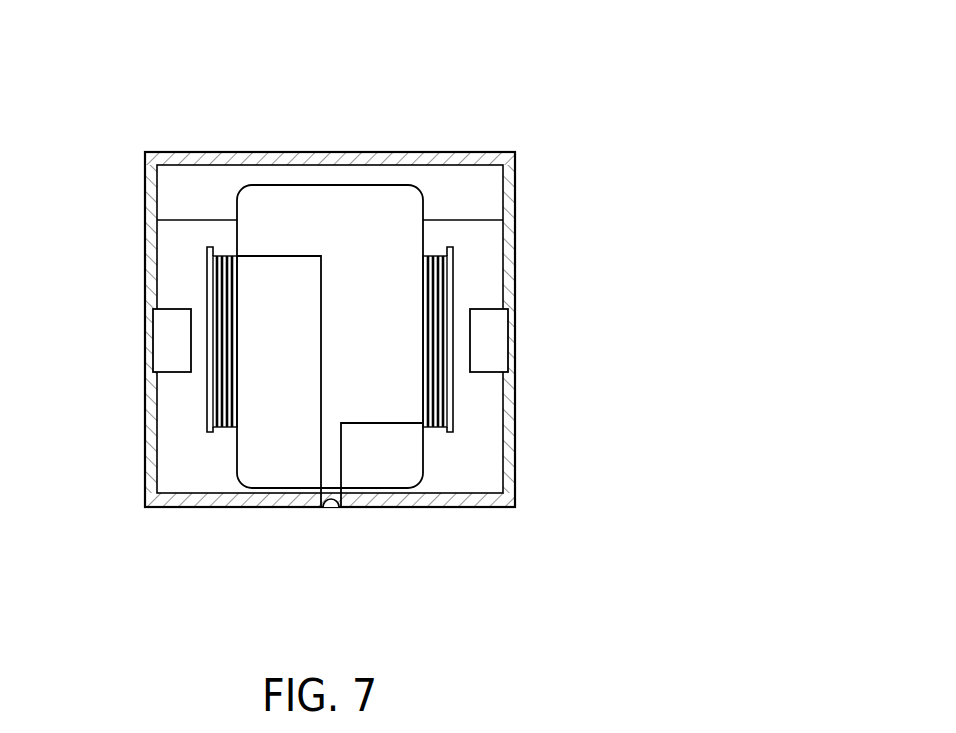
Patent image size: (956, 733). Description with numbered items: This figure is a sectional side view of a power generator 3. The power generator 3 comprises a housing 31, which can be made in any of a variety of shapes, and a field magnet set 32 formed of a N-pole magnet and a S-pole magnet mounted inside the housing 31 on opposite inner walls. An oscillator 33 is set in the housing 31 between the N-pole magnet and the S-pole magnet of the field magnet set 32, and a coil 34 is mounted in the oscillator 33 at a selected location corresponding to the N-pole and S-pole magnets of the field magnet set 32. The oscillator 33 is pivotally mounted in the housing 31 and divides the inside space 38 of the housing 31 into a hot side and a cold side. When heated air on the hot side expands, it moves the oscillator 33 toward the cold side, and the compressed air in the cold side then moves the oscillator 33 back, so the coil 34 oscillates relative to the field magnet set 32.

The power generator 3 is at (346, 283).
The housing 31 is at (508, 262).
The field magnet set 32 is at (157, 363).
The oscillator 33 is at (363, 205).
The coil 34 is at (218, 390).
The inside space 38 is at (297, 178).